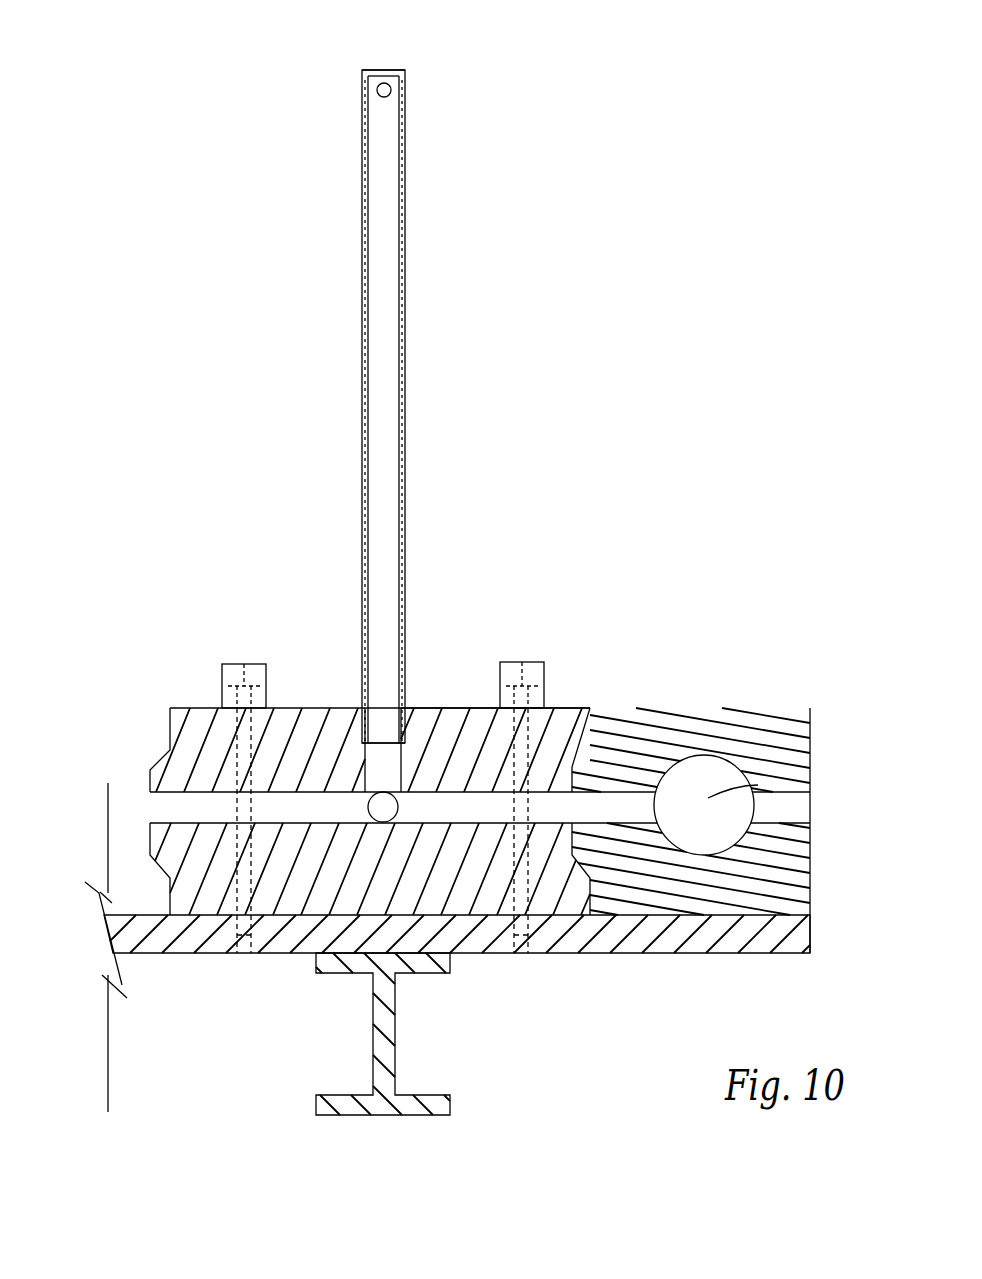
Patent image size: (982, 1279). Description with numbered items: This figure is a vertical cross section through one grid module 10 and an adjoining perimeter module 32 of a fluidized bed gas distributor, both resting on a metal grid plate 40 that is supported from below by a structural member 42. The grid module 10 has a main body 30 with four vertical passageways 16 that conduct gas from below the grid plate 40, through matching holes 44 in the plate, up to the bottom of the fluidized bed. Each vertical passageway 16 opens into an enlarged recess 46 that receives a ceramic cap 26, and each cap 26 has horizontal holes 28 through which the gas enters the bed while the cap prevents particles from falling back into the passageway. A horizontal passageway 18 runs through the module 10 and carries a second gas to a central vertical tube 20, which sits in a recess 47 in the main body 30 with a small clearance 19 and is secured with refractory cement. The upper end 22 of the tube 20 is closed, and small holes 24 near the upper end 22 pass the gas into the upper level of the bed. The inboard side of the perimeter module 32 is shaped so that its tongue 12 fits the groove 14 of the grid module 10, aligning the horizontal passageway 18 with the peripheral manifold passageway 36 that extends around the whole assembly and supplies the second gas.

The grid module 10 is at (318, 708).
The tongue 12 is at (150, 836).
The groove 14 is at (652, 805).
The vertical passageway 16 is at (165, 758).
The horizontal passageway 18 is at (165, 806).
The gap 19 is at (398, 760).
The vertical tube 20 is at (362, 410).
The upper end 22 is at (380, 70).
The small holes 24 is at (377, 90).
The cap 26 is at (240, 664).
The horizontal holes 28 is at (232, 684).
The main body 30 is at (470, 708).
The perimeter module 32 is at (812, 762).
The passageway 36 is at (758, 785).
The grid plate 40 is at (200, 953).
The I-beam support 42 is at (373, 1036).
The holes 44 is at (237, 958).
The recess 46 is at (225, 708).
The recess 47 is at (368, 740).